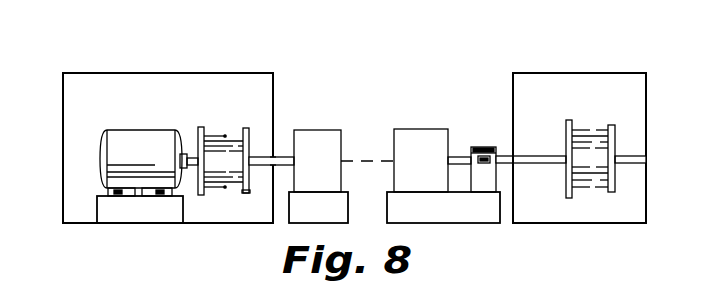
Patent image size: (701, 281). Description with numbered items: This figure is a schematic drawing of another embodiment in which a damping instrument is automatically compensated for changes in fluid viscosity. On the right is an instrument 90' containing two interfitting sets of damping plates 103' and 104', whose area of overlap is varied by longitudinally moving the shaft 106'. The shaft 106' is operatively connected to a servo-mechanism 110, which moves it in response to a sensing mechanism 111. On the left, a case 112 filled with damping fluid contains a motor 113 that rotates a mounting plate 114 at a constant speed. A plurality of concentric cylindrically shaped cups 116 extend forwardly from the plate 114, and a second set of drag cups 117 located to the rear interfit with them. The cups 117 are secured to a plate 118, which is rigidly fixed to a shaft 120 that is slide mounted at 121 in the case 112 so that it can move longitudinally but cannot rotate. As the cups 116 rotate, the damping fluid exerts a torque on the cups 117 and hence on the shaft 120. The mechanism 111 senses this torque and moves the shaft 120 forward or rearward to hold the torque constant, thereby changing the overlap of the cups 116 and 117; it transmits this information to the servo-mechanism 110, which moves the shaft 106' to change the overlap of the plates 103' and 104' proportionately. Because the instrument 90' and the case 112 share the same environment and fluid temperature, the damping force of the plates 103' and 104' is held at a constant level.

The case 112 is at (203, 73).
The motor 113 is at (125, 141).
The mounting plate 114 is at (197, 130).
The concentric cylindrically shaped cups 116 is at (212, 130).
The second set of drag cups 117 is at (231, 132).
The plate 118 is at (246, 193).
The shaft 120 is at (282, 156).
The slide mounting 121 is at (279, 167).
The sensing mechanism 111 is at (321, 138).
The servo-mechanism 110 is at (424, 138).
The shaft 106' is at (481, 148).
The instrument 90' is at (579, 128).
The plate 103' is at (589, 140).
The plate 104' is at (626, 143).